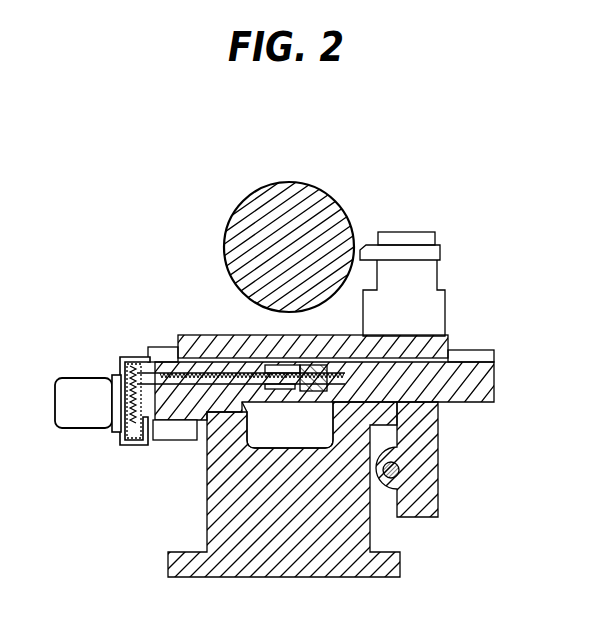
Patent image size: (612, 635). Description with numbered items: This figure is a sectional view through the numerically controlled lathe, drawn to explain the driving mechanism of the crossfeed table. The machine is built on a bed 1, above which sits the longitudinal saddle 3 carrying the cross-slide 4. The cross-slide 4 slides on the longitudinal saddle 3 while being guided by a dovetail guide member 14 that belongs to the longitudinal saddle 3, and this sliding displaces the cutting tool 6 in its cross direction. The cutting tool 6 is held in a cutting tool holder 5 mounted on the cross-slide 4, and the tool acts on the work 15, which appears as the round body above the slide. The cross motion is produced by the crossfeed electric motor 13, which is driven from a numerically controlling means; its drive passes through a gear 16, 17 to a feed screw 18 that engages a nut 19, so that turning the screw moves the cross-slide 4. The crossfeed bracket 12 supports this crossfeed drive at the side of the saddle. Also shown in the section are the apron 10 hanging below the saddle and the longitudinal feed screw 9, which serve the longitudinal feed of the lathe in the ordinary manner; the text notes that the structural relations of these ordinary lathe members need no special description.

The bed 1 is at (215, 498).
The longitudinal saddle 3 is at (494, 378).
The cross-slide 4 is at (203, 335).
The cutting tool holder 5 is at (437, 276).
The cutting tool 6 is at (436, 251).
The longitudinal feed screw 9 is at (398, 474).
The apron 10 is at (428, 441).
The crossfeed bracket 12 is at (120, 367).
The crossfeed electric motor 13 is at (72, 393).
The dovetail guide member 14 is at (483, 350).
The work 15 is at (308, 192).
The gear 16 is at (134, 425).
The gear 17 is at (148, 360).
The feed screw 18 is at (313, 415).
The nut 19 is at (273, 347).